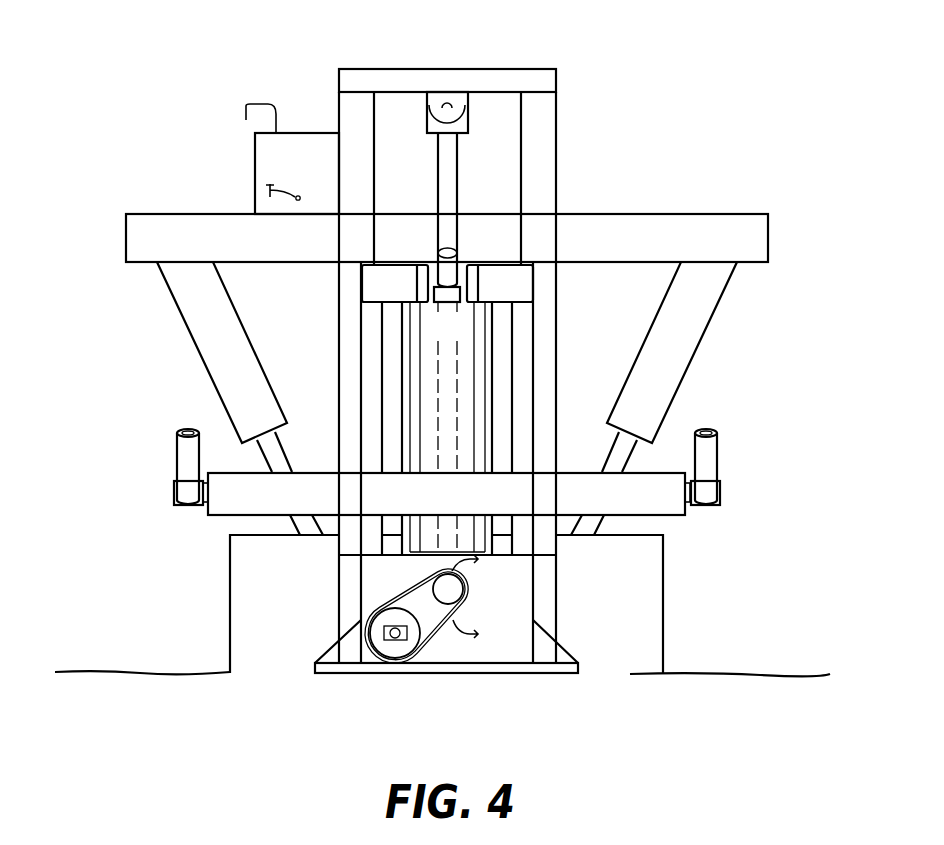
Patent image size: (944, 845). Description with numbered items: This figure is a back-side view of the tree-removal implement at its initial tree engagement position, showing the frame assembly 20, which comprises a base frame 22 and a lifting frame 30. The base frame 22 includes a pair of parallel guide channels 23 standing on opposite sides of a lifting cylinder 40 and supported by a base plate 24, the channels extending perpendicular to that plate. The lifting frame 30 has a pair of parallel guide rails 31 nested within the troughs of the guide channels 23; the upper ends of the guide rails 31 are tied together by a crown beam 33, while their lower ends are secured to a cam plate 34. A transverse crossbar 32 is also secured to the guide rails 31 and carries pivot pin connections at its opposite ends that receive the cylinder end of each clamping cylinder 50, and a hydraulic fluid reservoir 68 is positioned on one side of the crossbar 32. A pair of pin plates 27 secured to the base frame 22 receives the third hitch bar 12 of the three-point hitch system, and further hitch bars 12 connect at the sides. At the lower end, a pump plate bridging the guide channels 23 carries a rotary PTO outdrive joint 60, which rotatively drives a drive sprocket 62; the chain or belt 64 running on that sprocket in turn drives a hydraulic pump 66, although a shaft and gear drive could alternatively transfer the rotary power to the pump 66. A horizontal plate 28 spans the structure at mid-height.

The frame assembly 20 is at (565, 143).
The lifting frame 30 is at (333, 95).
The crown beam 33 is at (502, 78).
The guide rails 31 is at (545, 185).
The hydraulic fluid reservoir 68 is at (303, 167).
The transverse crossbar 32 is at (698, 251).
The hitch bar 12 is at (443, 255).
The pin plates 27 is at (423, 281).
The base frame 22 is at (530, 342).
The guide channels 23 is at (370, 362).
The lifting cylinder 40 is at (459, 337).
The clamping cylinders 50 is at (221, 329).
The intermediate plate 28 is at (616, 511).
The cam plate 34 is at (631, 577).
The base plate 24 is at (553, 667).
The PTO outdrive joint 60 is at (397, 638).
The drive sprocket 62 is at (385, 647).
The chain or belt 64 is at (403, 592).
The hydraulic pump 66 is at (453, 592).